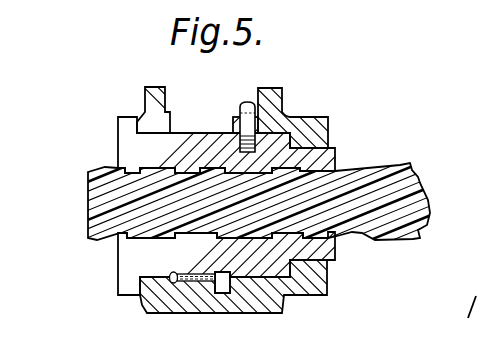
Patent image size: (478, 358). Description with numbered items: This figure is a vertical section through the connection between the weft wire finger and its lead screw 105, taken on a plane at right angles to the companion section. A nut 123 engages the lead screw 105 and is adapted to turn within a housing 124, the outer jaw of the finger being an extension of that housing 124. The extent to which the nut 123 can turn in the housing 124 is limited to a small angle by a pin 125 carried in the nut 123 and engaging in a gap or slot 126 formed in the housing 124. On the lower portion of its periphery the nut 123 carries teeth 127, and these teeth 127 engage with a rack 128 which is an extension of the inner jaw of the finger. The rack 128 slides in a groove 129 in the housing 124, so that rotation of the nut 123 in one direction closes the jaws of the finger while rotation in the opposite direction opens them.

The lead screw 105 is at (368, 190).
The nut 123 is at (123, 132).
The housing 124 is at (147, 310).
The pin 125 is at (250, 108).
The gap or slot 126 is at (236, 122).
The teeth 127 is at (185, 282).
The rack 128 is at (203, 280).
The groove 129 is at (262, 295).